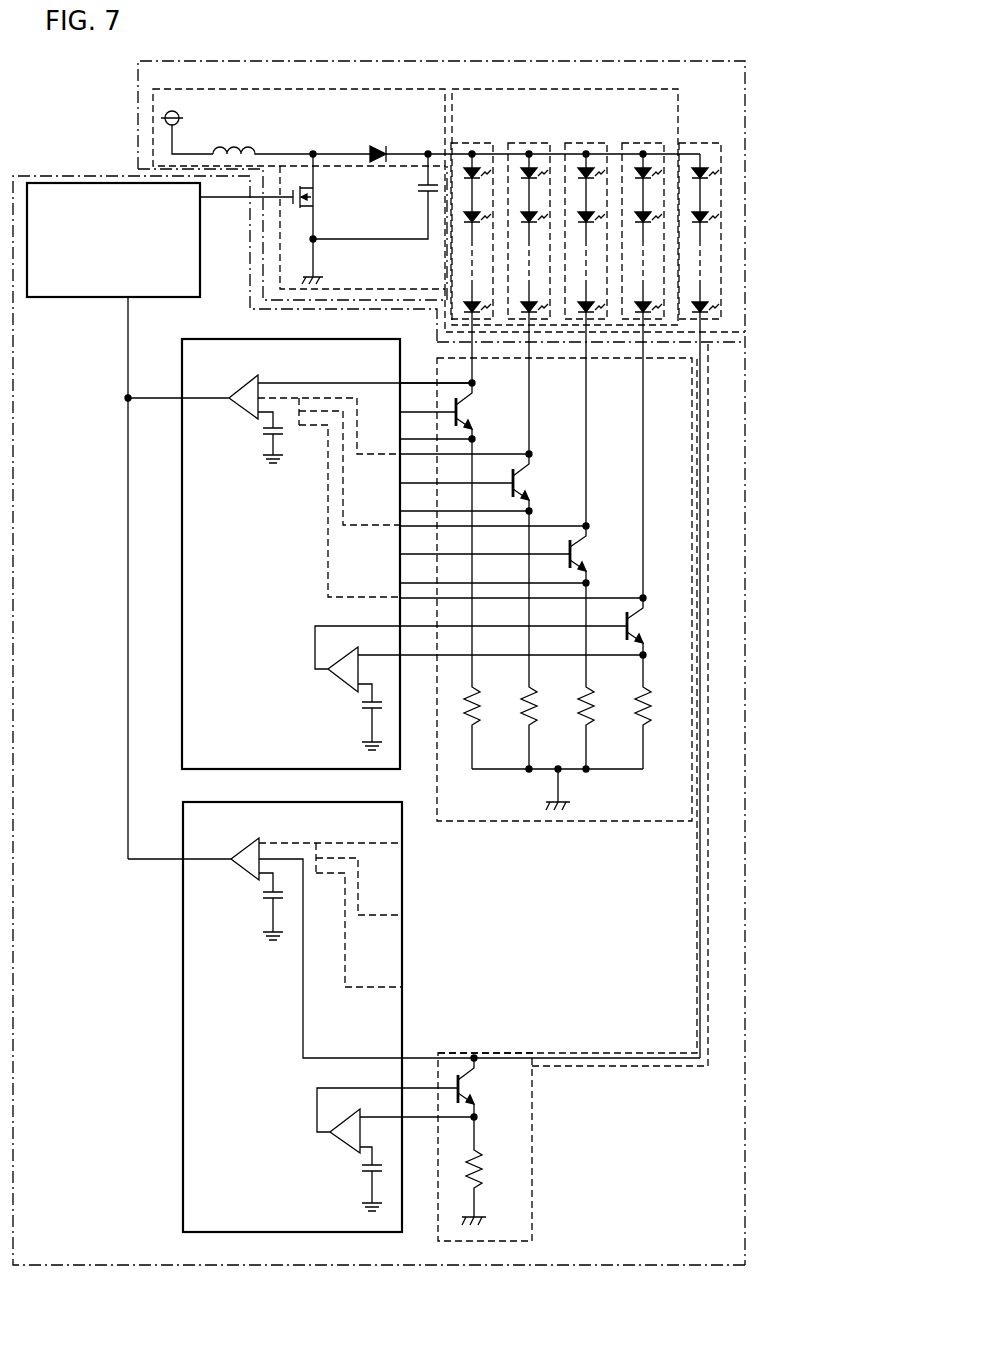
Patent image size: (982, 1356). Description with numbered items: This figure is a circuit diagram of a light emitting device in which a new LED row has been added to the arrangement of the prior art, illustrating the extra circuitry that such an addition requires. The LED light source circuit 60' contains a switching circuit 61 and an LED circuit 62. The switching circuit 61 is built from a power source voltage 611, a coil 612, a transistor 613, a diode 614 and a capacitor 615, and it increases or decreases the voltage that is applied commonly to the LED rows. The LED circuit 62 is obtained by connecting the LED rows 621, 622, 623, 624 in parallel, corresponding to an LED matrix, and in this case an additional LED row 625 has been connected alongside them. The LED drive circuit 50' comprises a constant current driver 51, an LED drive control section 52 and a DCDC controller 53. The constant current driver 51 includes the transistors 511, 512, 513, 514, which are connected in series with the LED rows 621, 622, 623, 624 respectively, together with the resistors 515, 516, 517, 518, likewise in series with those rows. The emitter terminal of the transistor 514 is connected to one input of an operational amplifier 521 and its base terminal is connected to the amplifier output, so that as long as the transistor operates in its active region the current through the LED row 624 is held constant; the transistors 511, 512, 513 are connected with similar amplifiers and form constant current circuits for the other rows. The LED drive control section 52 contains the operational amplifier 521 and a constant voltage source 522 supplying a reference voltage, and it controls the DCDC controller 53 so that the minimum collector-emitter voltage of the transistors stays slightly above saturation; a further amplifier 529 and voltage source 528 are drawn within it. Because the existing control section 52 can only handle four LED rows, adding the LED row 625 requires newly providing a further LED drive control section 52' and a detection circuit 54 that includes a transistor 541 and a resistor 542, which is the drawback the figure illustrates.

The LED drive circuit 50' is at (379, 709).
The constant current driver 51 is at (518, 822).
The transistor 511 is at (465, 410).
The transistor 512 is at (522, 481).
The transistor 513 is at (579, 552).
The transistor 514 is at (636, 624).
The resistor 515 is at (480, 700).
The resistor 516 is at (537, 700).
The resistor 517 is at (594, 700).
The resistor 518 is at (651, 700).
The LED drive control section 52 is at (291, 543).
The operational amplifier 521 is at (345, 690).
The constant voltage source 522 is at (368, 712).
The reference voltage source 528 is at (268, 436).
The operational amplifier 529 is at (242, 415).
The LED drive control section 52' is at (414, 1006).
The DCDC controller 53 is at (60, 297).
The detection circuit 54 is at (532, 1170).
The transistor 541 is at (467, 1085).
The resistor 542 is at (482, 1163).
The LED light source circuit 60' is at (459, 663).
The switching circuit 61 is at (237, 89).
The power source voltage 611 is at (178, 116).
The coil 612 is at (240, 148).
The transistor 613 is at (313, 197).
The diode 614 is at (378, 144).
The capacitor 615 is at (420, 194).
The LED circuit 62 is at (632, 89).
The LED row 621 is at (473, 142).
The LED row 622 is at (530, 142).
The LED row 623 is at (587, 142).
The LED row 624 is at (644, 142).
The LED row 625 is at (701, 142).